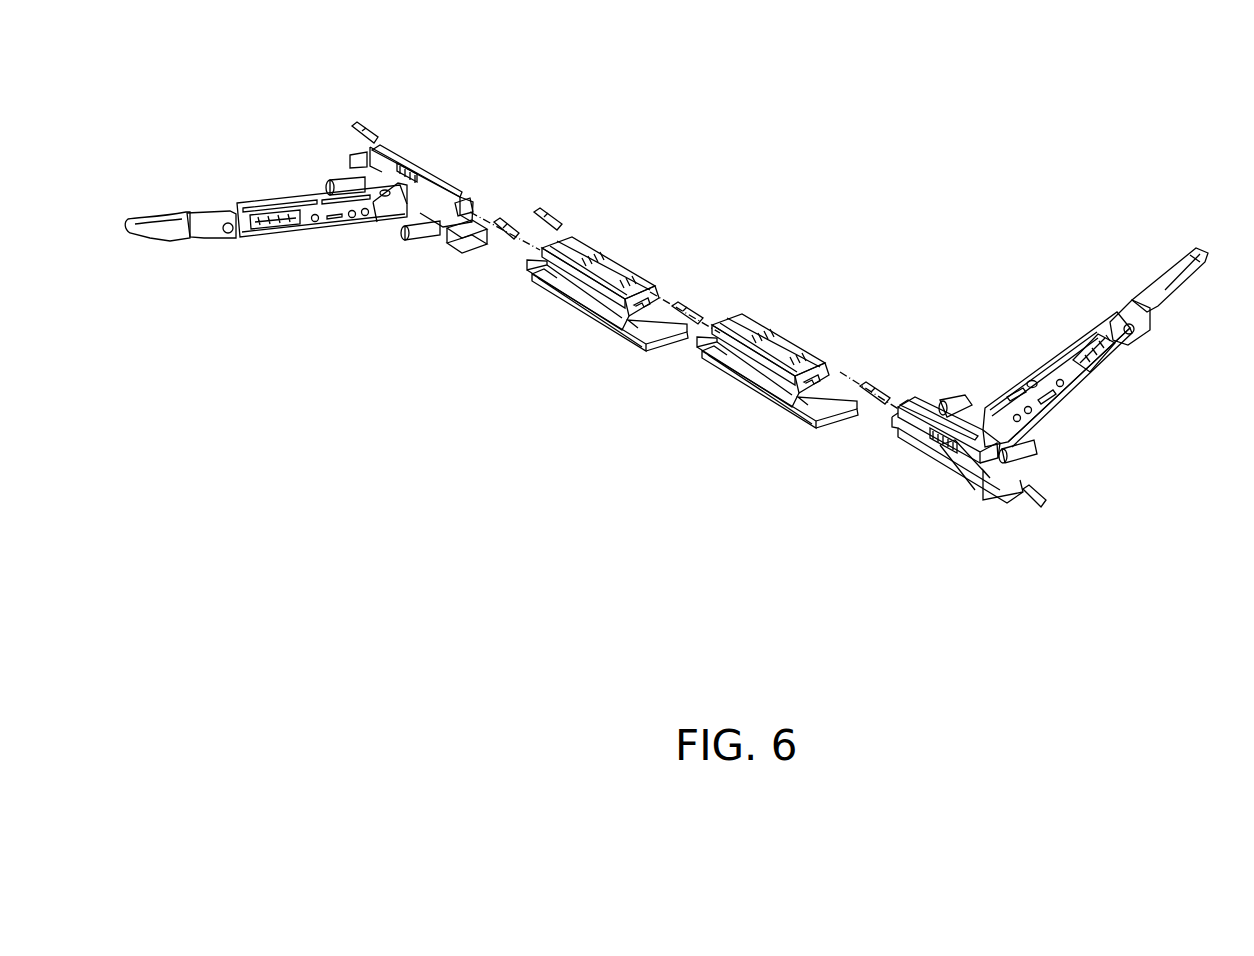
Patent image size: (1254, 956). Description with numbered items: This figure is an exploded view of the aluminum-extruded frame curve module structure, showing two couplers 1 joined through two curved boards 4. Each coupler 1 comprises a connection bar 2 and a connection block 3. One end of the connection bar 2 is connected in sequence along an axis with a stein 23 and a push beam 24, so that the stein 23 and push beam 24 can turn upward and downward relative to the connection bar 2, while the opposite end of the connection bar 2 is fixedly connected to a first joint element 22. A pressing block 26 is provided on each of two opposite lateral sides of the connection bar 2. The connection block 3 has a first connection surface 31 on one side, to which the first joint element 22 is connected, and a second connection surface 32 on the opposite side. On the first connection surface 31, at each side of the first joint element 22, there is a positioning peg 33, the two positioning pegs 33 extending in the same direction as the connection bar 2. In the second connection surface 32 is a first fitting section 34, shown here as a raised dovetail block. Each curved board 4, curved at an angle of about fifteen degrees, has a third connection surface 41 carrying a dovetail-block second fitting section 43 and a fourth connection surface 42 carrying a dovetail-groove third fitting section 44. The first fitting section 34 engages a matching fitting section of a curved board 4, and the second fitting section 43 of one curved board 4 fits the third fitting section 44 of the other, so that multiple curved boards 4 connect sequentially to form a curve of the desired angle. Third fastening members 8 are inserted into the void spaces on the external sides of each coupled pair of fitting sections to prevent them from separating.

The coupler 1 is at (250, 160).
The connection bar 2 is at (320, 226).
The connection block 3 is at (390, 163).
The curved board 4 is at (570, 237).
The third fastening member 8 is at (358, 125).
The first joint element 22 is at (390, 214).
The stein 23 is at (232, 210).
The push beam 24 is at (175, 227).
The pressing block 26 is at (277, 228).
The first connection surface 31 is at (427, 200).
The second connection surface 32 is at (453, 180).
The positioning peg 33 is at (337, 178).
The first fitting section 34 is at (960, 480).
The third connection surface 41 is at (603, 253).
The fourth connection surface 42 is at (560, 275).
The second fitting section 43 is at (657, 290).
The third fitting section 44 is at (585, 302).